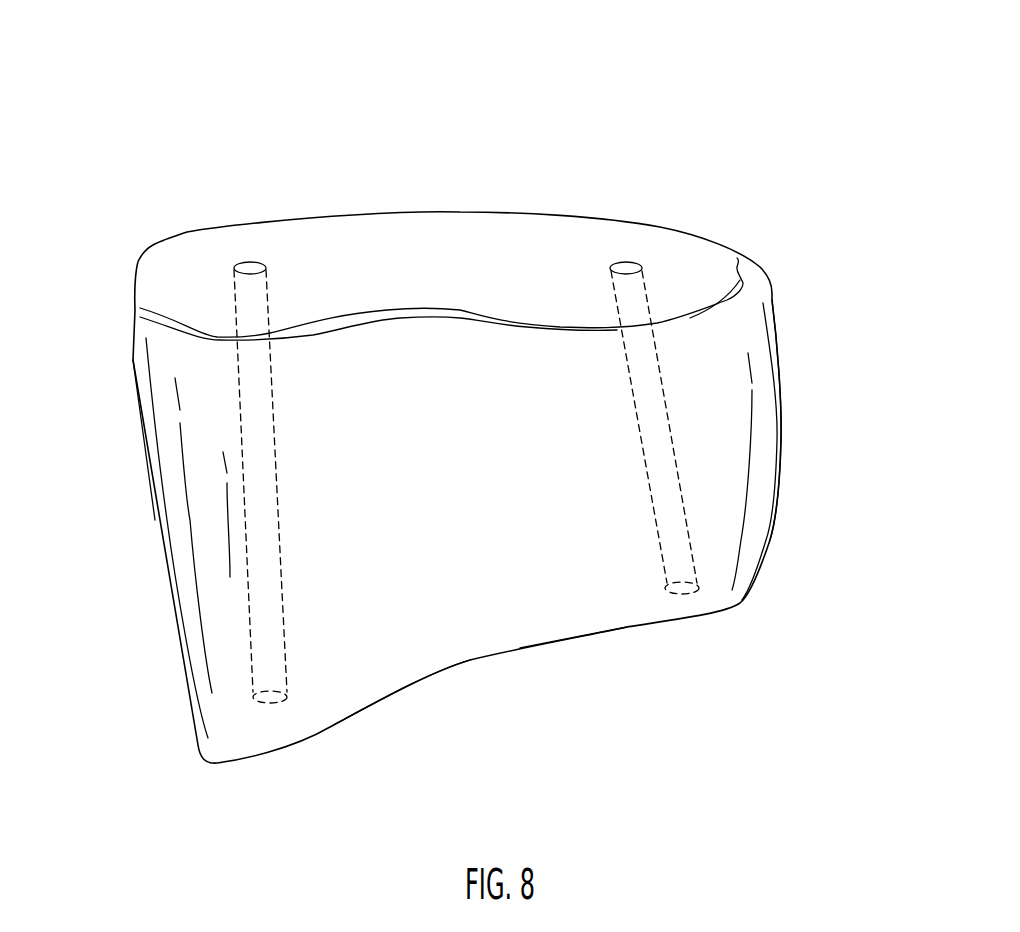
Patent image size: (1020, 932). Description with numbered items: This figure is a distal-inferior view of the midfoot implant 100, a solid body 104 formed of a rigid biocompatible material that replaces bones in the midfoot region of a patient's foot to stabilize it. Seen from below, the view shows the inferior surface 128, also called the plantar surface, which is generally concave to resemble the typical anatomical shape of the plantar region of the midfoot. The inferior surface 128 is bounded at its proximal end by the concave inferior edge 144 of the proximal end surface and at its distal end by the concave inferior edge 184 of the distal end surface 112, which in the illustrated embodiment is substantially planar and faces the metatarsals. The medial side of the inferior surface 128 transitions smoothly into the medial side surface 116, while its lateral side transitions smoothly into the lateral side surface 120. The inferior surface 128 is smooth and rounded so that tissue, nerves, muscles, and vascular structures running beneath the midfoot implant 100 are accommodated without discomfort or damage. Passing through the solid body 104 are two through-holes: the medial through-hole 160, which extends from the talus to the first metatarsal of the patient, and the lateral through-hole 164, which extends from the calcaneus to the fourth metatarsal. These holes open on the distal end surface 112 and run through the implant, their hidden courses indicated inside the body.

The midfoot implant 100 is at (465, 433).
The solid body 104 is at (732, 373).
The distal end surface 112 is at (373, 248).
The medial side surface 116 is at (800, 462).
The lateral side surface 120 is at (151, 548).
The inferior surface 128 is at (463, 605).
The concave inferior edge 144 is at (581, 637).
The medial through-hole 160 is at (625, 263).
The lateral through-hole 164 is at (247, 263).
The concave inferior edge 184 is at (498, 333).